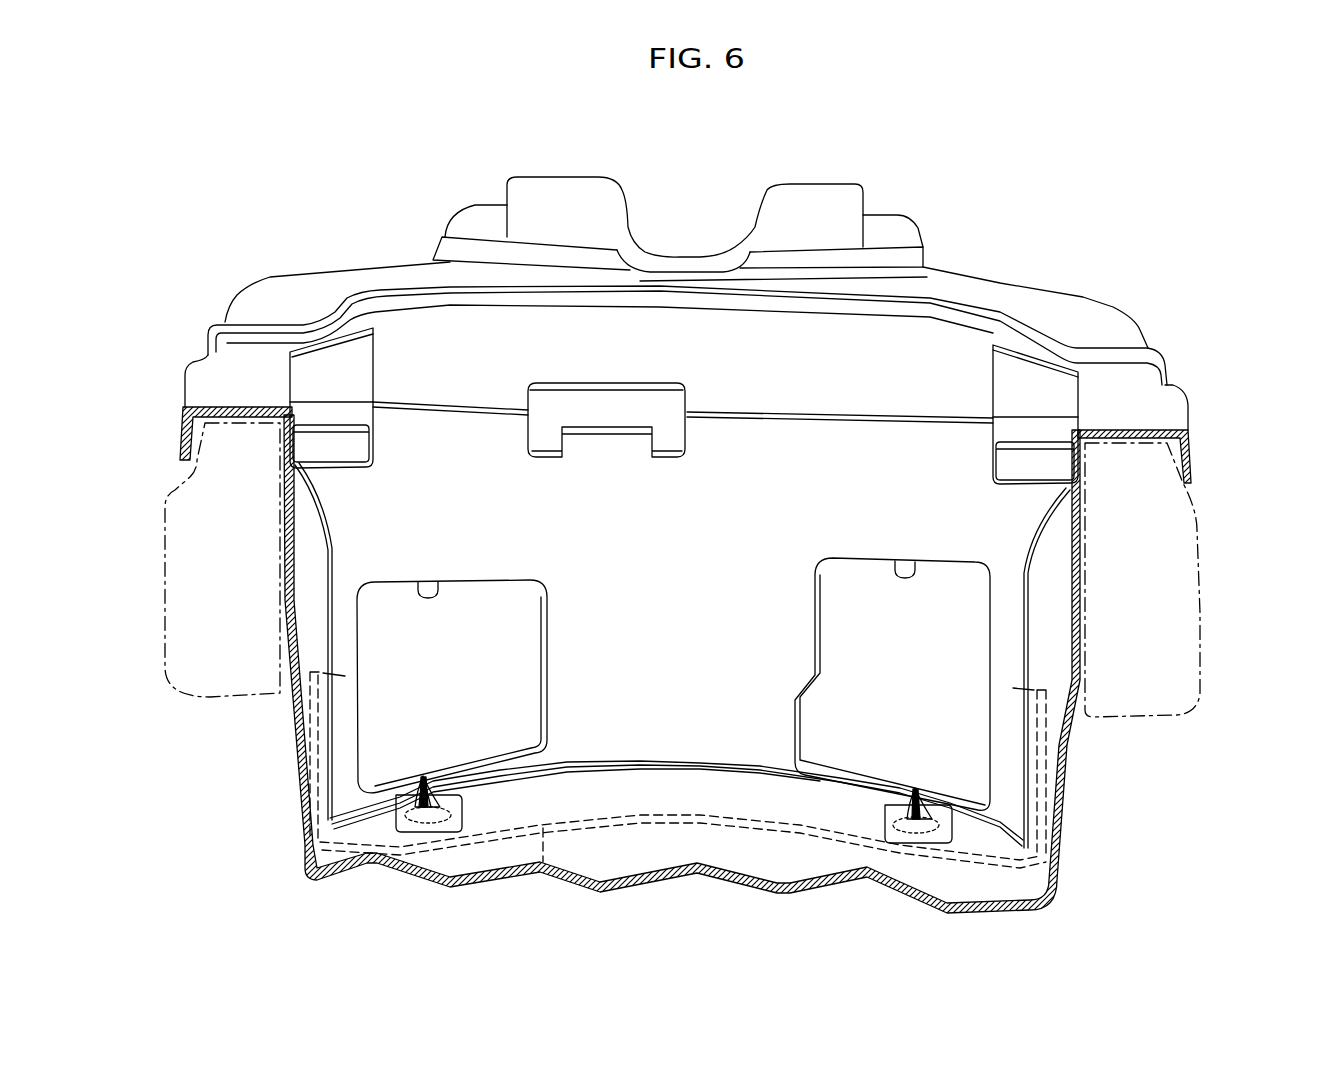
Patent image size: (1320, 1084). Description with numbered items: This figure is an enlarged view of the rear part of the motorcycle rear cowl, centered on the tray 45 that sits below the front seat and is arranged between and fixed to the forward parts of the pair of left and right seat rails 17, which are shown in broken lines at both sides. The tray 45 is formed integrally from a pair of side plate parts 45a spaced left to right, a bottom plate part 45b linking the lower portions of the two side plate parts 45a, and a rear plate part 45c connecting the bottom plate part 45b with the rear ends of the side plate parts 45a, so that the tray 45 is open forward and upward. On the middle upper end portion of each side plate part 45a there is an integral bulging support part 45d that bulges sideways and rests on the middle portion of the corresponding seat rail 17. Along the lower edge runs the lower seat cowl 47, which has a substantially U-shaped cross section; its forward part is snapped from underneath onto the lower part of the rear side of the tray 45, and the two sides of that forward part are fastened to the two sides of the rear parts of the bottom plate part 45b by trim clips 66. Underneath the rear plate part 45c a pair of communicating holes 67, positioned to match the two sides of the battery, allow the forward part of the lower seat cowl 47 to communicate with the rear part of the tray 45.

The tray 45 is at (702, 676).
The side plate part 45a is at (667, 880).
The bottom plate part 45b is at (690, 676).
The rear plate part 45c is at (415, 323).
The bulging support part 45d is at (202, 383).
The lower seat cowl 47 is at (537, 880).
The trim clip 66 is at (425, 780).
The communicating hole 67 is at (427, 590).
The seat rail 17 is at (163, 613).